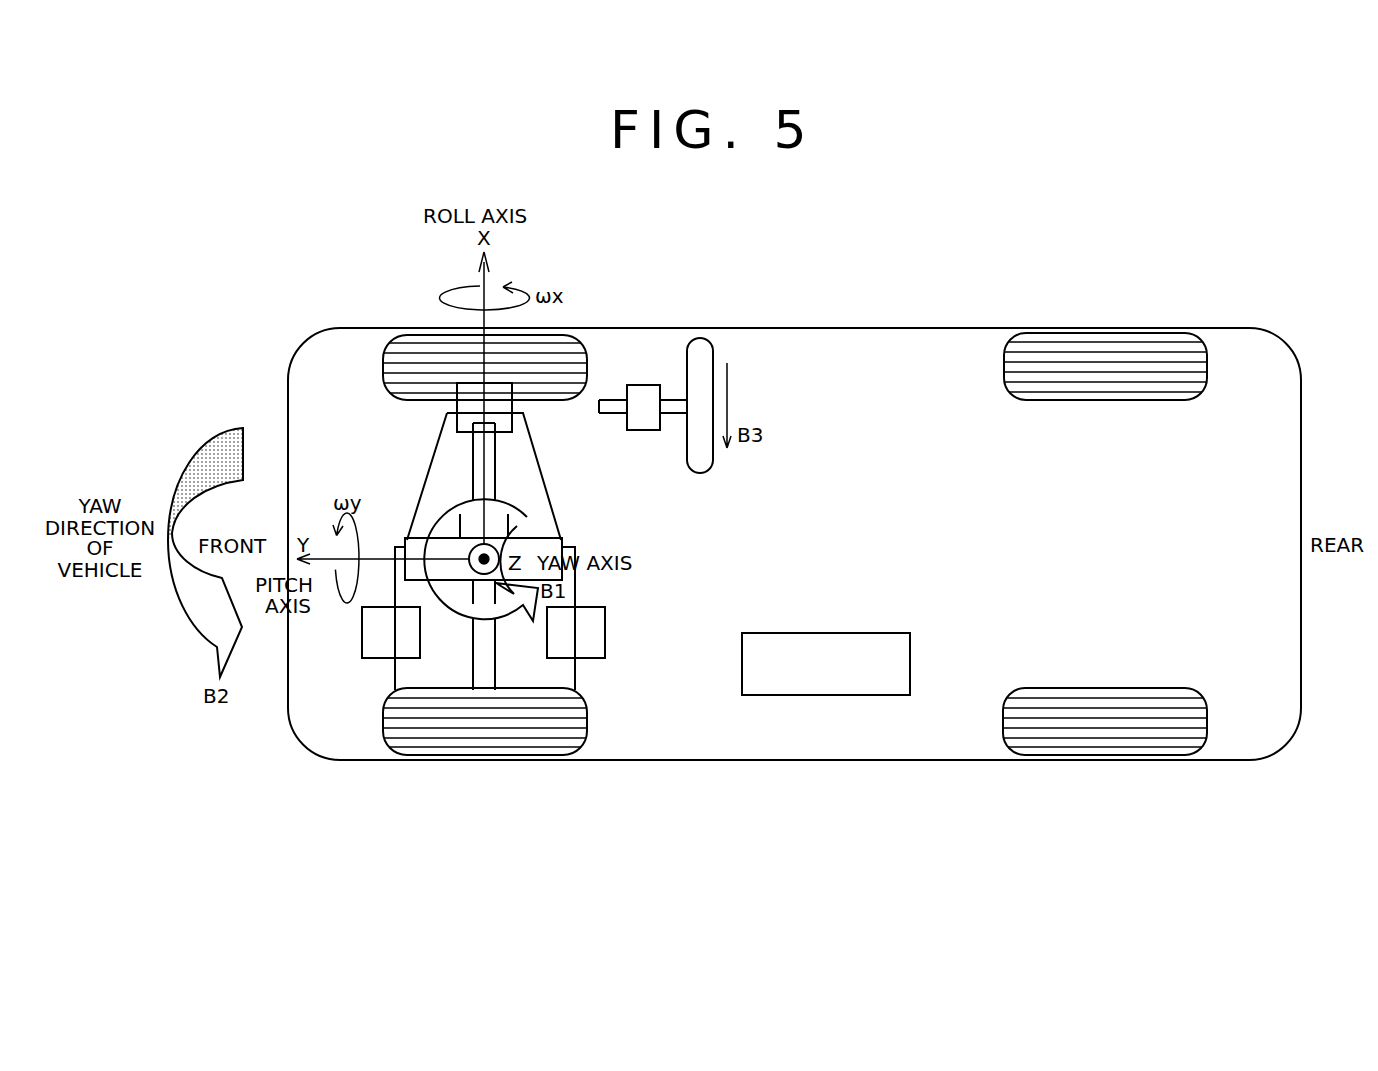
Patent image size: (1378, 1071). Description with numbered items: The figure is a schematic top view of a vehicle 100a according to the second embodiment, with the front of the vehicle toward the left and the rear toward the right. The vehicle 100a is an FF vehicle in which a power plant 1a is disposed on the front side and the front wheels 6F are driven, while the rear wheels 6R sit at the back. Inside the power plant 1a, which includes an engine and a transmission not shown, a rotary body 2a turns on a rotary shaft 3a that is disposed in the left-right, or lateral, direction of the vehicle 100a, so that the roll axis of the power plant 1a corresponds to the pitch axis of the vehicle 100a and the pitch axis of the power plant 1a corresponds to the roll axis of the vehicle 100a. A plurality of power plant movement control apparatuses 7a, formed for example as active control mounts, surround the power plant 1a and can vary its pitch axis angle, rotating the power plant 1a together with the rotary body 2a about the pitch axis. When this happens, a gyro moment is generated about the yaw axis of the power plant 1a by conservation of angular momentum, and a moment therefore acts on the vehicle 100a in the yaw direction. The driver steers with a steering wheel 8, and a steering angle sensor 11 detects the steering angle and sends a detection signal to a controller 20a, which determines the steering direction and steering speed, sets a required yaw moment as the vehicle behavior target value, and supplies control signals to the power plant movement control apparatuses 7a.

The vehicle 100a is at (811, 243).
The front wheels 6F is at (411, 335).
The rear wheels 6R is at (1100, 333).
The power plant 1a is at (427, 482).
The rotary body 2a is at (418, 540).
The rotary shaft 3a is at (490, 645).
The power plant movement control apparatus 7a is at (457, 407).
The steering wheel 8 is at (705, 328).
The steering angle sensor 11 is at (645, 385).
The controller 20a is at (910, 660).